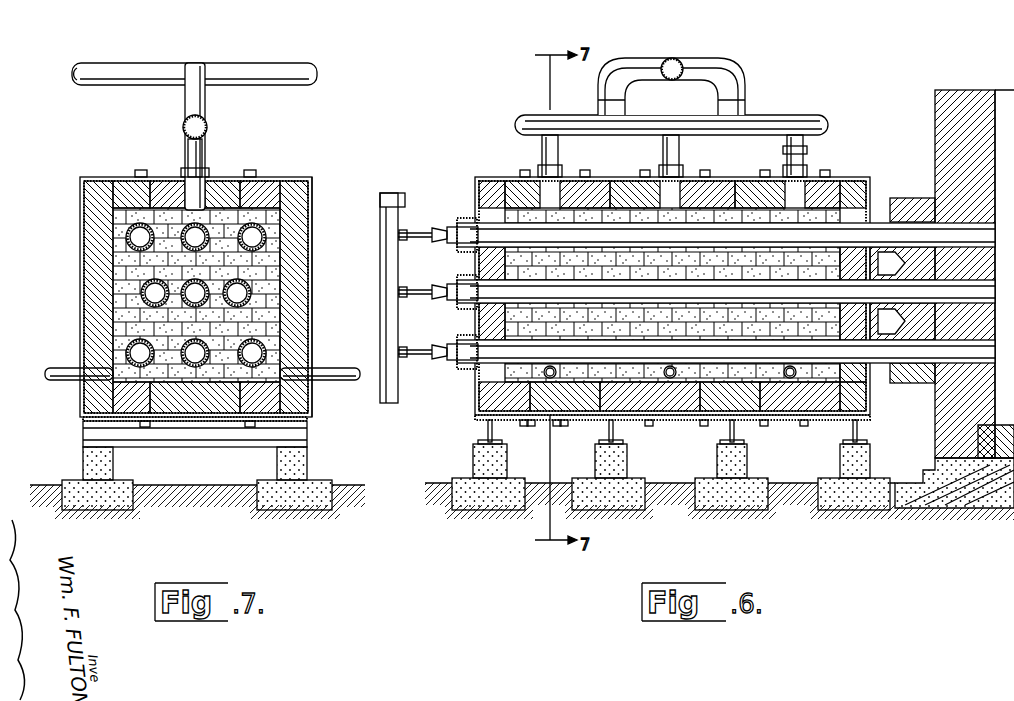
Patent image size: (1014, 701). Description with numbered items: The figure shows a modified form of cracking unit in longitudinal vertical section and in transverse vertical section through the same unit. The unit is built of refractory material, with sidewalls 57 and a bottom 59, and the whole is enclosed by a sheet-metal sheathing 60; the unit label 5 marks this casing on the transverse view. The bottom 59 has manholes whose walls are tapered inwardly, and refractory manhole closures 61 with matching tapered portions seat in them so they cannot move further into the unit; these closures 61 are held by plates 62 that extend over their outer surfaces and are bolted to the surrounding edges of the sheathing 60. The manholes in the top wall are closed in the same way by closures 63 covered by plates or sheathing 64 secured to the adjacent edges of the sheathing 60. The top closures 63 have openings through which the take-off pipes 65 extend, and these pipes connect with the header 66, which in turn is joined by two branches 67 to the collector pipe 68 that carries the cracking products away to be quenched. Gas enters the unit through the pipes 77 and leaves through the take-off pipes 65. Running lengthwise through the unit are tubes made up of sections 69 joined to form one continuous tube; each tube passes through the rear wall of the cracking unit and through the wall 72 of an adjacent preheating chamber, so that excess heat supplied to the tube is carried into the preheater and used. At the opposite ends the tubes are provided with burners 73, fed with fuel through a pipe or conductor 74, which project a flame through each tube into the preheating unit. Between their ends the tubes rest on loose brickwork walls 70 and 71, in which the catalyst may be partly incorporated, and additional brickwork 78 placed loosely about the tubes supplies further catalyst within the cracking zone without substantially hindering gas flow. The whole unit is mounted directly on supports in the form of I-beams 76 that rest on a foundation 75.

In FIG. 7, the furnace casing 5 is at (270, 177).
In FIG. 7, the sidewalls 57 is at (300, 270).
In FIG. 7, the bottom 59 is at (270, 425).
In FIG. 6, the bottom 59 is at (750, 420).
In FIG. 7, the sheathing 60 is at (312, 295).
In FIG. 7, the manhole closures 61 is at (183, 425).
In FIG. 6, the manhole closures 61 is at (560, 422).
In FIG. 7, the plates 62 is at (212, 425).
In FIG. 6, the plates 62 is at (534, 422).
In FIG. 7, the manhole closures 63 is at (232, 177).
In FIG. 6, the manhole closures 63 is at (840, 177).
In FIG. 7, the plates 64 is at (211, 172).
In FIG. 6, the plates 64 is at (785, 170).
In FIG. 7, the take-off pipes 65 is at (188, 142).
In FIG. 6, the take-off pipes 65 is at (806, 150).
In FIG. 7, the header 66 is at (206, 124).
In FIG. 6, the header 66 is at (778, 116).
In FIG. 7, the branches 67 is at (185, 100).
In FIG. 6, the branches 67 is at (738, 78).
In FIG. 7, the collector pipe 68 is at (262, 70).
In FIG. 6, the collector pipe 68 is at (688, 58).
In FIG. 6, the tube sections 69 is at (480, 200).
In FIG. 6, the loose brickwork wall 70 is at (607, 224).
In FIG. 6, the loose brickwork wall 71 is at (718, 212).
In FIG. 6, the preheating chamber wall 72 is at (945, 183).
In FIG. 6, the burners 73 is at (455, 360).
In FIG. 6, the fuel pipe 74 is at (386, 320).
In FIG. 6, the foundation 75 is at (485, 495).
In FIG. 6, the I-beams 76 is at (488, 430).
In FIG. 7, the gas inlet pipes 77 is at (328, 380).
In FIG. 6, the gas inlet pipes 77 is at (805, 420).
In FIG. 7, the additional brickwork 78 is at (282, 248).